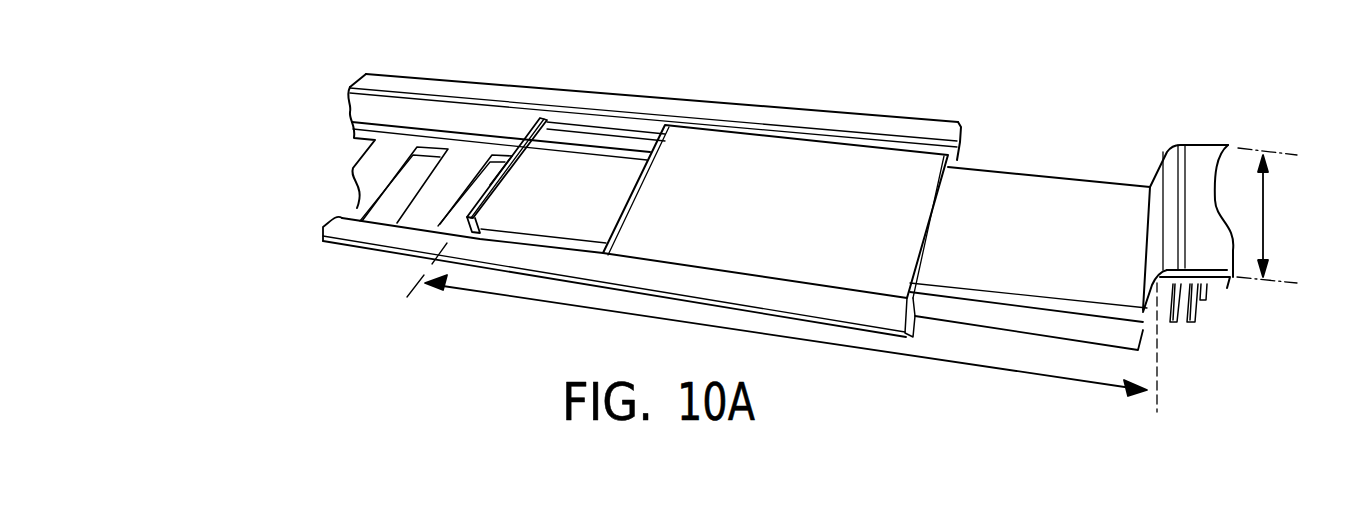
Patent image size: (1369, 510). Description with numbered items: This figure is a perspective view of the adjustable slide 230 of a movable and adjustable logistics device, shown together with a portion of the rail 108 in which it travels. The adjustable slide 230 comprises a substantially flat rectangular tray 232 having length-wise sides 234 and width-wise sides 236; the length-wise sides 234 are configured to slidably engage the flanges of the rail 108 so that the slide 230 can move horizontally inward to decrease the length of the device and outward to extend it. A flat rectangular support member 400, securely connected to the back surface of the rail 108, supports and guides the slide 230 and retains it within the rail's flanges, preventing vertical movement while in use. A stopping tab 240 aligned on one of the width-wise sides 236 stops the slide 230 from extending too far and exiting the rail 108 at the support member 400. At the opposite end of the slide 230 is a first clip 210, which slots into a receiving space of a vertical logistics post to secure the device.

The rail 108 is at (377, 78).
The stopping tab 240 is at (527, 127).
The support member 400 is at (809, 218).
The adjustable slide 230 is at (736, 195).
The tray 232 is at (1015, 190).
The first clip 210 is at (1240, 138).
The length-wise sides 234 is at (663, 322).
The width-wise sides 236 is at (1267, 196).